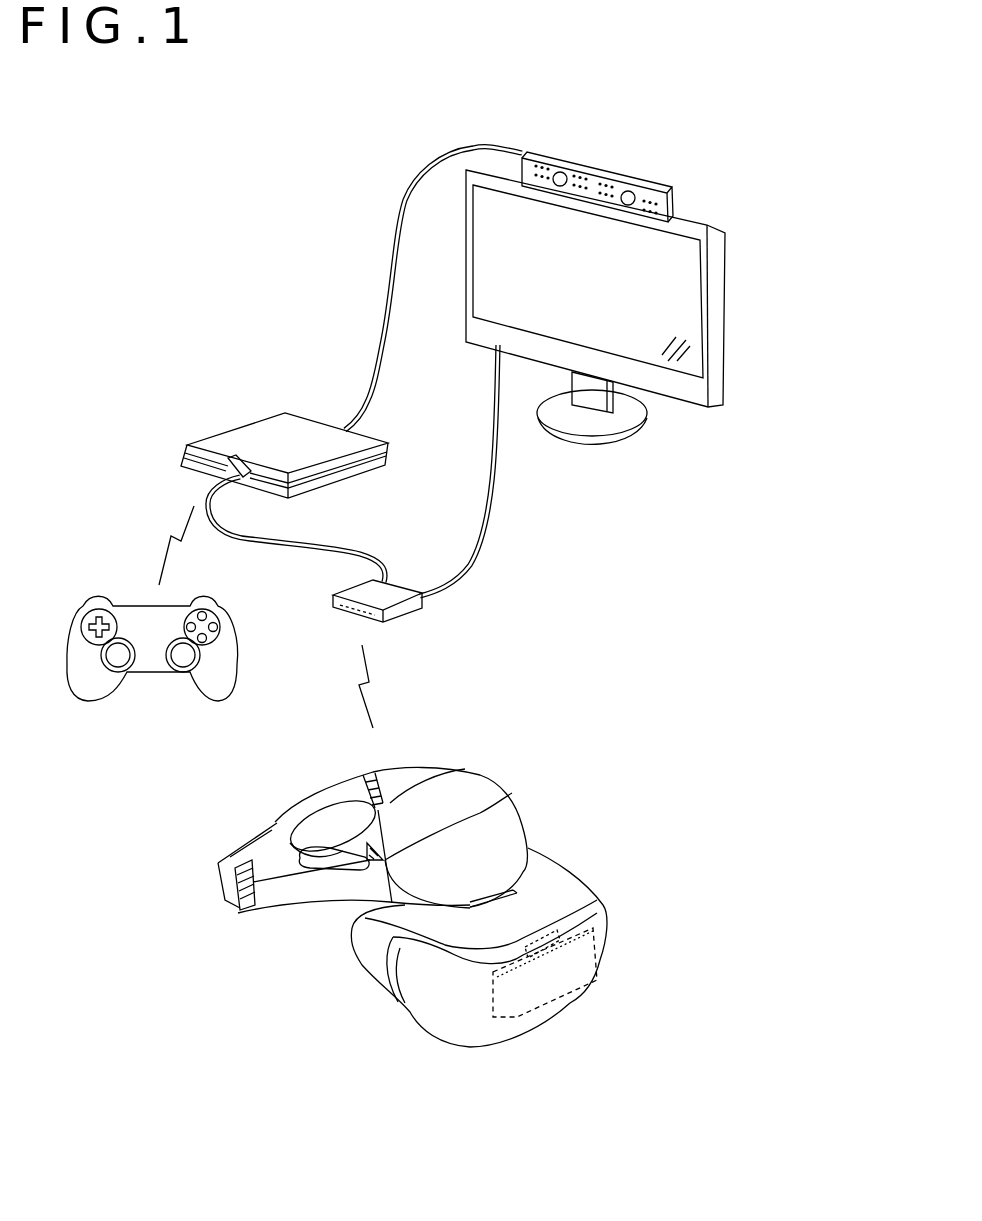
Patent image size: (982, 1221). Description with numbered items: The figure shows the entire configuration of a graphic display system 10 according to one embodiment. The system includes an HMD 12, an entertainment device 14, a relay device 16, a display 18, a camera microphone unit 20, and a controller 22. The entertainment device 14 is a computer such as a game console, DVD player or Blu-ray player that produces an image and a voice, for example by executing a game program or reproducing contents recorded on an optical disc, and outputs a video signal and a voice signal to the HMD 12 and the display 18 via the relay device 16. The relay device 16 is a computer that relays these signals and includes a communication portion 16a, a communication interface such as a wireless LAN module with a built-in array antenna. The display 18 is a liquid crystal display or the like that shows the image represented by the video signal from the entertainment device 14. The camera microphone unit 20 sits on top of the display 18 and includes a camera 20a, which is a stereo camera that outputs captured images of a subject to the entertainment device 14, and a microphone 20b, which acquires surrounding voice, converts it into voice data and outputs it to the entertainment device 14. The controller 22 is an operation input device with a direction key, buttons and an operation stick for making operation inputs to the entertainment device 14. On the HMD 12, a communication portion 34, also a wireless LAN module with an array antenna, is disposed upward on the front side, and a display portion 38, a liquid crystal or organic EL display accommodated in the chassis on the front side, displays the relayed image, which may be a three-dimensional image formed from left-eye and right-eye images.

The graphic display system 10 is at (708, 1033).
The HMD 12 is at (442, 929).
The entertainment device 14 is at (237, 430).
The relay device 16 is at (407, 622).
The communication portion 16a is at (380, 623).
The display 18 is at (725, 313).
The camera microphone unit 20 is at (624, 180).
The camera 20a is at (558, 190).
The microphone 20b is at (588, 163).
The controller 22 is at (235, 657).
The communication portion 34 is at (559, 928).
The display portion 38 is at (600, 940).